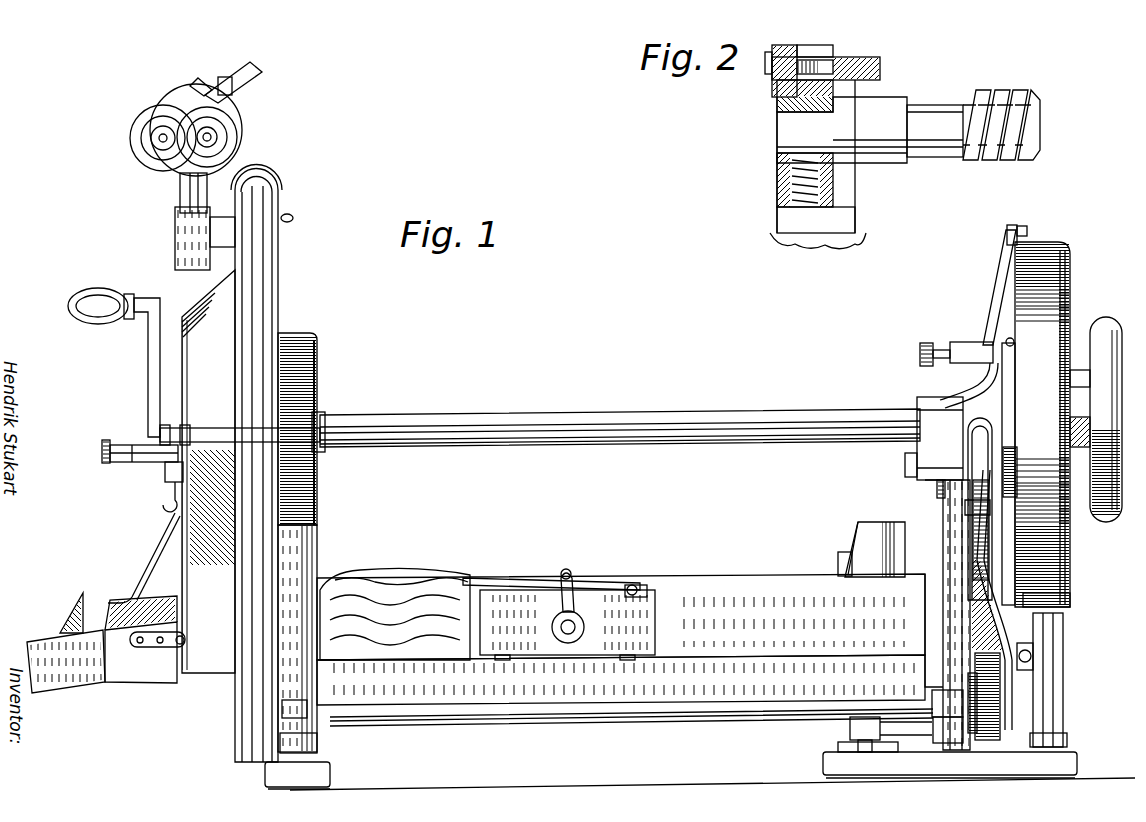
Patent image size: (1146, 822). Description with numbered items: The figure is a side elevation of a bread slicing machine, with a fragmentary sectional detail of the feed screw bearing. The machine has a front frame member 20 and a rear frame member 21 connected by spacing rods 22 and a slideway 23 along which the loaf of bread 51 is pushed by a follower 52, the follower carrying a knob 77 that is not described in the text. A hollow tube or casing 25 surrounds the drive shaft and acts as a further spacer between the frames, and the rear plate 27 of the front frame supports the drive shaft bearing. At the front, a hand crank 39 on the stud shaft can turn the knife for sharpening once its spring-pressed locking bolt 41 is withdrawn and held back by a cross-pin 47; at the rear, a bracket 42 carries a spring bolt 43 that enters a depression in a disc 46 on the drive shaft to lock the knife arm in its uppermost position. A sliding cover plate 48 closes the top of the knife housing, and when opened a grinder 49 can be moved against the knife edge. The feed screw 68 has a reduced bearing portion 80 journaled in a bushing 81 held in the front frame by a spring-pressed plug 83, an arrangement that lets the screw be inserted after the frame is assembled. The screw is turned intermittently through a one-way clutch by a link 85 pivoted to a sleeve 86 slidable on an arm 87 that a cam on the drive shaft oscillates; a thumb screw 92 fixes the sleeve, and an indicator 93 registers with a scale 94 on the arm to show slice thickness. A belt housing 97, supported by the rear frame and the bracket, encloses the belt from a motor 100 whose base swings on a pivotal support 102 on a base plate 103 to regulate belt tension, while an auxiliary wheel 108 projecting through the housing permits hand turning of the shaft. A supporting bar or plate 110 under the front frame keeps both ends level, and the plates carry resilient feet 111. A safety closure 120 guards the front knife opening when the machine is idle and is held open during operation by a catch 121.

In FIG. 1, the front frame member 20 is at (302, 556).
In FIG. 2, the front frame member 20 is at (780, 182).
In FIG. 1, the rear frame member 21 is at (940, 606).
In FIG. 1, the spacing rods 22 is at (688, 722).
In FIG. 1, the slideway 23 is at (760, 640).
In FIG. 1, the hollow tube or casing 25 is at (692, 422).
In FIG. 1, the rear plate 27 is at (318, 473).
In FIG. 1, the hand crank 39 is at (150, 352).
In FIG. 1, the spring-pressed locking bolt 41 is at (130, 462).
In FIG. 1, the bracket 42 is at (1000, 278).
In FIG. 1, the spring bolt 43 is at (945, 345).
In FIG. 1, the disc 46 is at (1008, 338).
In FIG. 1, the cross-pin 47 is at (131, 448).
In FIG. 1, the cover plate 48 is at (265, 178).
In FIG. 1, the grinder 49 is at (187, 168).
In FIG. 1, the loaf of bread 51 is at (432, 580).
In FIG. 1, the follower 52 is at (540, 640).
In FIG. 2, the feed screw 68 is at (991, 160).
In FIG. 1, the clamp knob 77 is at (577, 582).
In FIG. 2, the reduced bearing portion 80 is at (792, 127).
In FIG. 2, the bushing 81 is at (777, 100).
In FIG. 2, the spring-pressed plug 83 is at (777, 170).
In FIG. 1, the link 85 is at (1003, 672).
In FIG. 1, the sleeve 86 is at (917, 466).
In FIG. 1, the arm 87 is at (992, 530).
In FIG. 1, the thumb screw 92 is at (940, 488).
In FIG. 1, the indicator 93 is at (965, 508).
In FIG. 1, the scale 94 is at (973, 540).
In FIG. 1, the housing 97 is at (1047, 287).
In FIG. 1, the motor 100 is at (840, 556).
In FIG. 1, the pivotal support 102 is at (895, 728).
In FIG. 1, the base plate 103 is at (950, 765).
In FIG. 1, the auxiliary wheel 108 is at (1106, 320).
In FIG. 1, the supporting bar or plate 110 is at (332, 775).
In FIG. 1, the resilient feet 111 is at (310, 787).
In FIG. 1, the safety closure 120 is at (147, 556).
In FIG. 1, the catch 121 is at (172, 468).